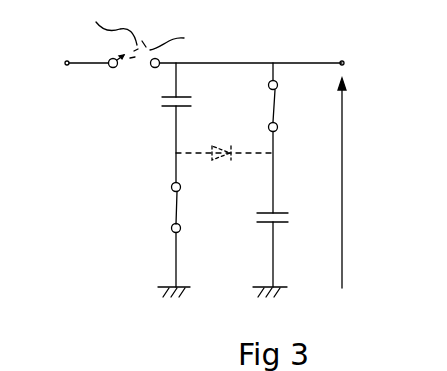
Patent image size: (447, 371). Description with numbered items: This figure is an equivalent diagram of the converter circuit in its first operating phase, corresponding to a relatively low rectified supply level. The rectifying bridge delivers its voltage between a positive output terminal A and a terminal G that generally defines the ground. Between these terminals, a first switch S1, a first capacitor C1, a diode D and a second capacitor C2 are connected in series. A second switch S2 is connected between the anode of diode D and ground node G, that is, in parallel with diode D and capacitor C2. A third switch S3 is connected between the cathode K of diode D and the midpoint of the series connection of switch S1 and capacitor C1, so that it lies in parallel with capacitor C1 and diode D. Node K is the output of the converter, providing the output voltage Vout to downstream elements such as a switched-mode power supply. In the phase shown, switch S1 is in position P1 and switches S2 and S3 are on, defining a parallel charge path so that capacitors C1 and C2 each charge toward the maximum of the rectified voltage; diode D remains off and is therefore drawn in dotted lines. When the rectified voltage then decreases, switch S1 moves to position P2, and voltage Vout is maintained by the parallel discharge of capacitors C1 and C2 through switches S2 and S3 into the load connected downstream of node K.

The output terminal A is at (55, 62).
The cathode node K is at (342, 53).
The first switch S1 is at (134, 69).
The second switch S2 is at (157, 208).
The third switch S3 is at (288, 106).
The switch position P1 is at (174, 36).
The switch position P2 is at (108, 30).
The first capacitor C1 is at (165, 115).
The second capacitor C2 is at (287, 220).
The diode D is at (224, 171).
The ground node G is at (220, 281).
The output voltage Vout is at (365, 183).